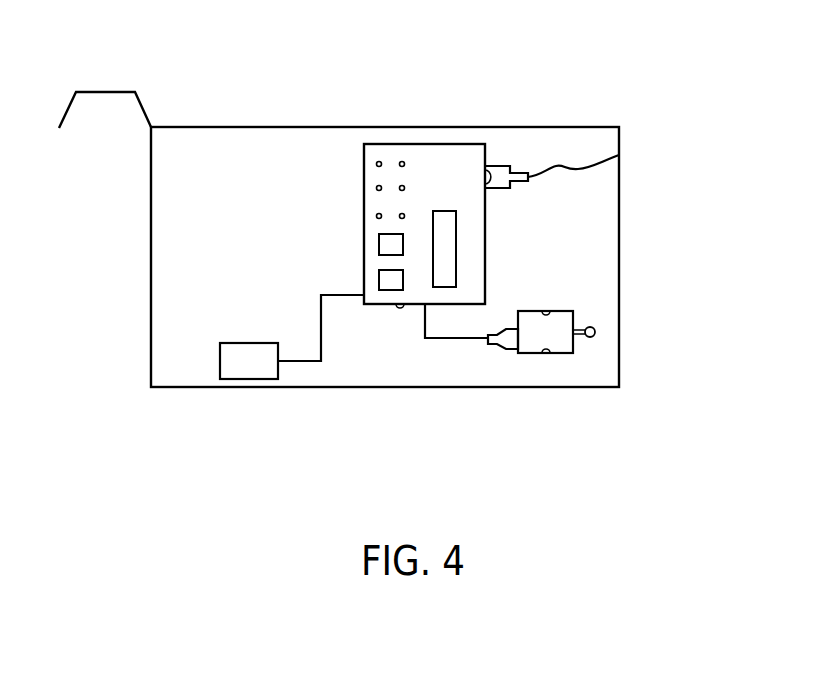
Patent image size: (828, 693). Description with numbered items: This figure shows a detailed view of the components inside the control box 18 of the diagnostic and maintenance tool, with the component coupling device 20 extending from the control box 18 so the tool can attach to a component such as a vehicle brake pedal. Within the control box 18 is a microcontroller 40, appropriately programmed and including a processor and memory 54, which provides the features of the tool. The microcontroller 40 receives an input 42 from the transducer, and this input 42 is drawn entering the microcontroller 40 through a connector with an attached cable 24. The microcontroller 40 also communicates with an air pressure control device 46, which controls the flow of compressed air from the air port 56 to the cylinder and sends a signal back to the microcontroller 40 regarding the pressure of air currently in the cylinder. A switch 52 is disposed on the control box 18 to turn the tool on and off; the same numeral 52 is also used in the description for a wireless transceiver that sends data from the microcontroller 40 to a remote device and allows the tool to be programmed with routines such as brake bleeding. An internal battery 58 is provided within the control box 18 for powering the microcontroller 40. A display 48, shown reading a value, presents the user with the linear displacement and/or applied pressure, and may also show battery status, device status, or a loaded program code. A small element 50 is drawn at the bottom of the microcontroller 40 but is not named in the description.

The control box 18 is at (151, 240).
The component coupling device 20 is at (102, 90).
The cable 24 is at (572, 168).
The microcontroller 40 is at (453, 144).
The input 42 is at (498, 163).
The air pressure control device 46 is at (565, 354).
The display 48 is at (252, 388).
The button 50 is at (400, 310).
The switch 52 is at (380, 242).
The processor and memory 54 is at (380, 277).
The air port 56 is at (597, 331).
The internal battery 58 is at (442, 288).